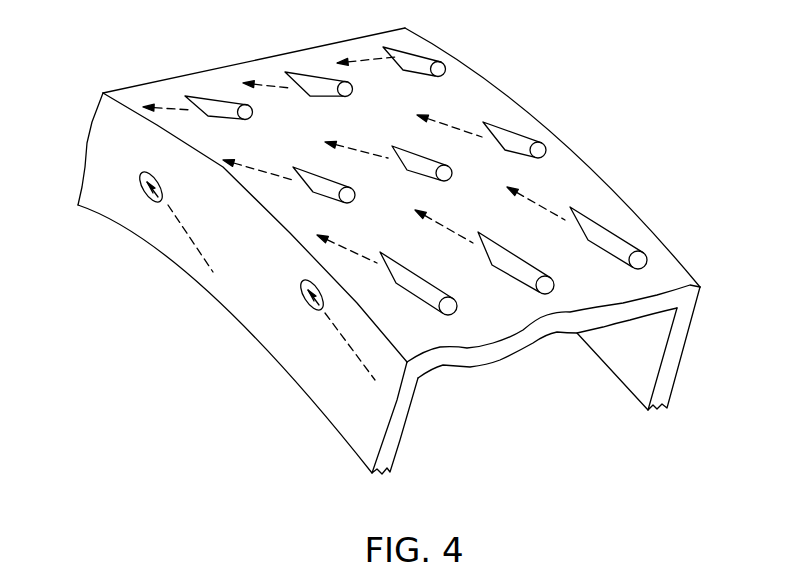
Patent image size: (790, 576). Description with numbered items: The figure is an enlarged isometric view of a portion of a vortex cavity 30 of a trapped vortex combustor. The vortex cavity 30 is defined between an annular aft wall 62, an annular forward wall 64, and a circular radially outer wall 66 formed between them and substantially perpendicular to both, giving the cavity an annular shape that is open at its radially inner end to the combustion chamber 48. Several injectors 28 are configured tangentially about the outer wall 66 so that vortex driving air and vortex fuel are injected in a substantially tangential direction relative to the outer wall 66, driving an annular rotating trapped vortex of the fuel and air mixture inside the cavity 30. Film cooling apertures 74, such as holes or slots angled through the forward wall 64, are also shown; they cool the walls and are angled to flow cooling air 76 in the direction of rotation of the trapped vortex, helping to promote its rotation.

The injector 28 is at (213, 95).
The vortex cavity 30 is at (698, 284).
The combustion chamber 48 is at (547, 380).
The annular aft wall 62 is at (692, 337).
The annular forward wall 64 is at (102, 148).
The circular radially outer wall 66 is at (576, 170).
The film cooling aperture 74 is at (297, 292).
The cooling air 76 is at (358, 358).